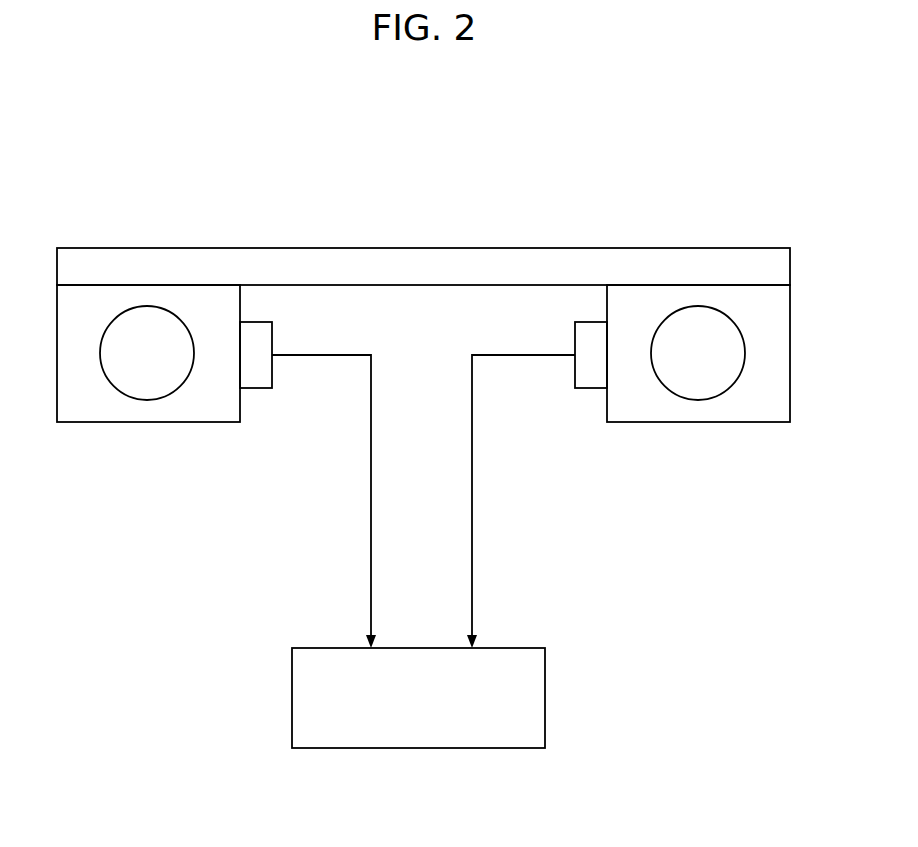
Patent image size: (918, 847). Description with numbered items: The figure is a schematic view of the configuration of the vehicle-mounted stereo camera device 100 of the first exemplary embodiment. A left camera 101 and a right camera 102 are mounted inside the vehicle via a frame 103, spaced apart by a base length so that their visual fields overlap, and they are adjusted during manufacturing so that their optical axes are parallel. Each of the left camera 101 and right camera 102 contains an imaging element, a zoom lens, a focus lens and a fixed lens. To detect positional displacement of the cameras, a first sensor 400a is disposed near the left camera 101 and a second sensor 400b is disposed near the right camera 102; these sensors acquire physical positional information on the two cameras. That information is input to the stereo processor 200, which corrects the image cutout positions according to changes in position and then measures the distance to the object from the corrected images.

The vehicle-mounted stereo camera device 100 is at (78, 150).
The left camera 101 is at (90, 303).
The right camera 102 is at (705, 302).
The frame 103 is at (313, 262).
The first sensor 400a is at (257, 367).
The second sensor 400b is at (585, 375).
The stereo processor 200 is at (547, 703).